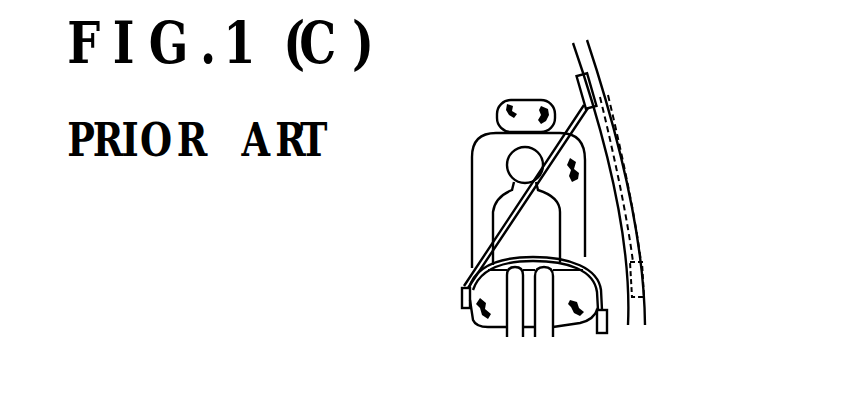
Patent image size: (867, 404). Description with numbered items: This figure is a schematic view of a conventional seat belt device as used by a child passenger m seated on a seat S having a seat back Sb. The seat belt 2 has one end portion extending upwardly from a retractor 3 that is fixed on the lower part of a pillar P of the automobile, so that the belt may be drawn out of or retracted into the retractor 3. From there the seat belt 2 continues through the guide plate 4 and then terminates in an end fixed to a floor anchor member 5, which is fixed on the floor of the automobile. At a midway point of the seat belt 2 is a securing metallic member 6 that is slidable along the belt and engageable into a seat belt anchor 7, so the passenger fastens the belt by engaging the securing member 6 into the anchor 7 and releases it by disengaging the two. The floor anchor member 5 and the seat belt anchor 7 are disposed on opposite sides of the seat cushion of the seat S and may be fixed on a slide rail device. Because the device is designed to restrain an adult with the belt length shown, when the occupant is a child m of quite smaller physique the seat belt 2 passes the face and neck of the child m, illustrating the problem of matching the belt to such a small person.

The seat belt 2 is at (473, 208).
The seat back Sb is at (488, 143).
The seat S is at (483, 325).
The child passenger m is at (550, 222).
The pillar P is at (605, 93).
The retractor 3 is at (642, 277).
The guide plate 4 is at (582, 76).
The securing metallic member 6 is at (469, 283).
The seat belt anchor 7 is at (461, 296).
The floor anchor member 5 is at (608, 325).